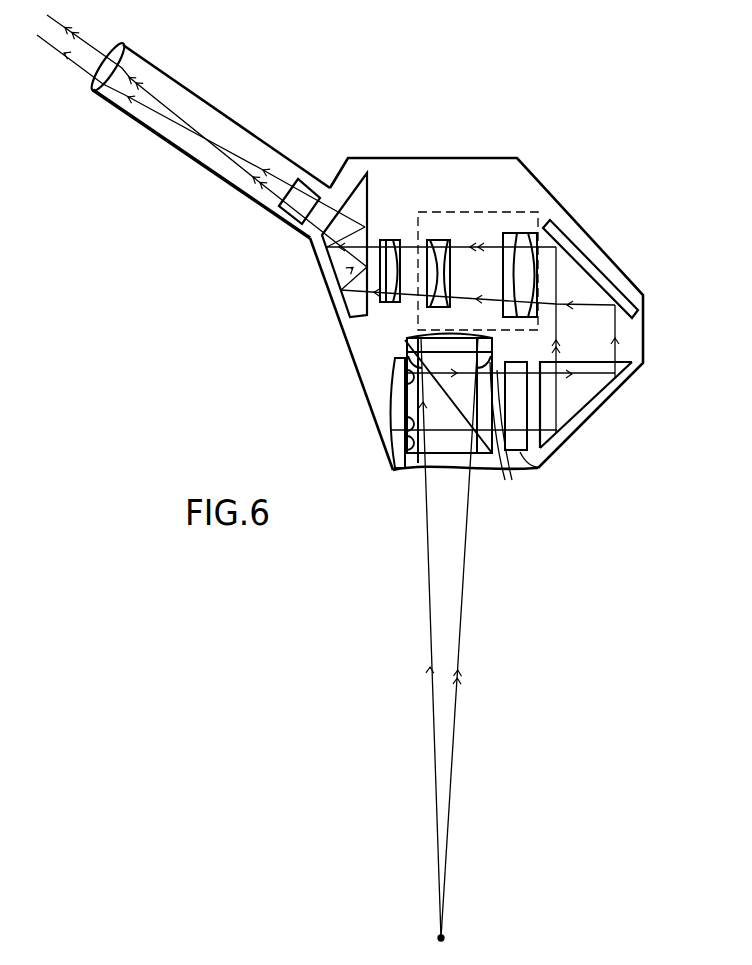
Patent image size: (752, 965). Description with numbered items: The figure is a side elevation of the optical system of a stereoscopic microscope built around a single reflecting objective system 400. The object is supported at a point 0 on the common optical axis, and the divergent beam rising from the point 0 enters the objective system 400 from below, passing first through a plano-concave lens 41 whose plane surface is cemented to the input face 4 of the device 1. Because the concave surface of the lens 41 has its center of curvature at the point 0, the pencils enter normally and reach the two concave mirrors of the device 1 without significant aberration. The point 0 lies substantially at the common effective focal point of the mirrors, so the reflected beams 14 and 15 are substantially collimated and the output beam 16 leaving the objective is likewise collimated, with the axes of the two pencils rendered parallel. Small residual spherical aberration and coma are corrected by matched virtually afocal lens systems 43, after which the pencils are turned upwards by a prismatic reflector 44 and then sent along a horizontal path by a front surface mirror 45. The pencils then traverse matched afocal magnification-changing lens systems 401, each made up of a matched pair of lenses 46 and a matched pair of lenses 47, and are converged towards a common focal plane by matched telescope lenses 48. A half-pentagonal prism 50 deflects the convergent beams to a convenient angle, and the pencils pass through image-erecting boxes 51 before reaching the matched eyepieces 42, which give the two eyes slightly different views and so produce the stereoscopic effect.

The eyepiece 42 is at (123, 45).
The image-erecting box 51 is at (308, 180).
The half-pentagonal prism 50 is at (334, 276).
The telescope lens 48 is at (387, 240).
The afocal magnification-changing lens system 401 is at (456, 194).
The matched pair of lenses 47 is at (437, 240).
The matched pair of lenses 46 is at (515, 235).
The front surface mirror 45 is at (574, 242).
The prismatic reflector 44 is at (583, 403).
The afocal lens system 43 is at (576, 424).
The output beam 16 is at (505, 478).
The beam 15 is at (410, 357).
The beam 14 is at (416, 374).
The device 1 is at (415, 402).
The input face 4 is at (418, 445).
The plano-concave lens 41 is at (413, 460).
The reflecting objective system 400 is at (368, 361).
The point 0 is at (432, 940).